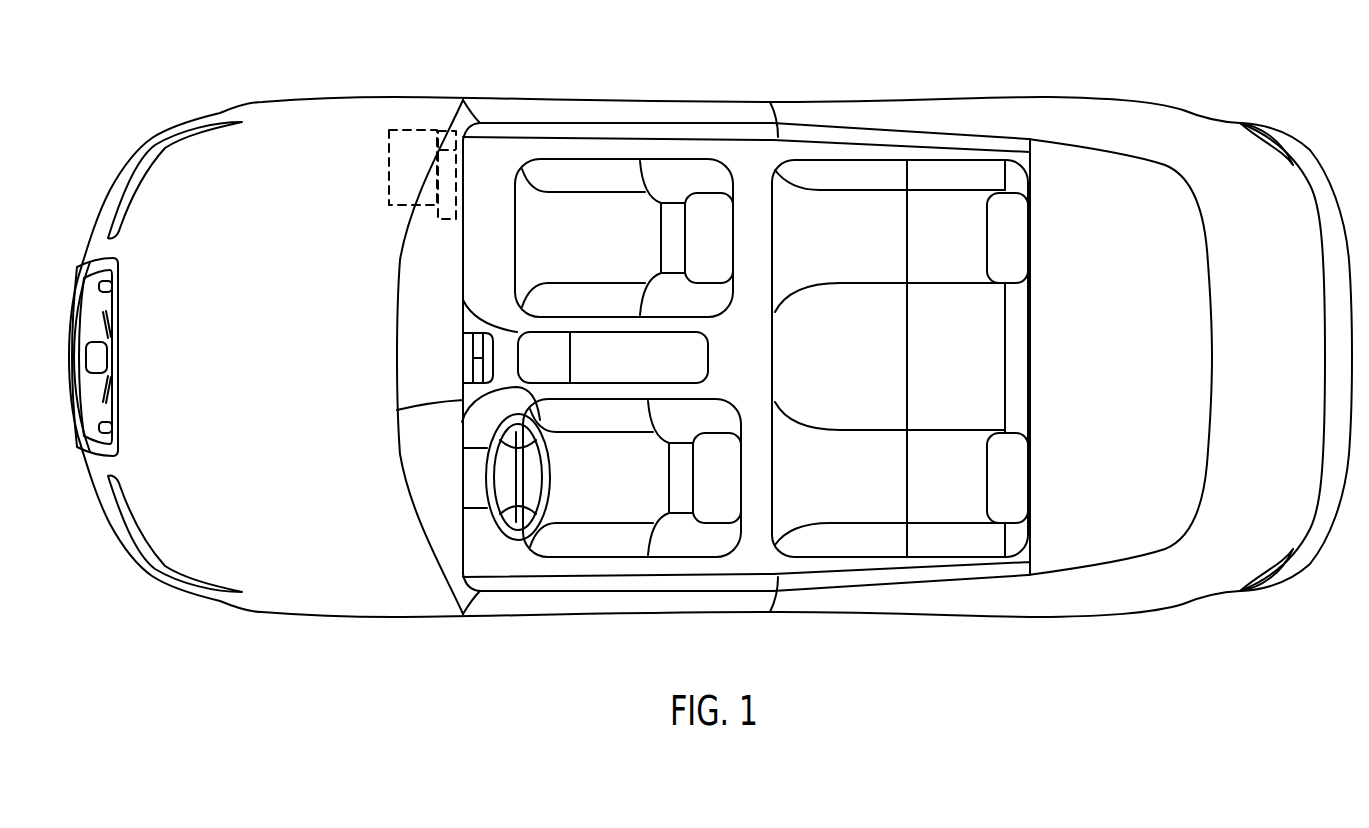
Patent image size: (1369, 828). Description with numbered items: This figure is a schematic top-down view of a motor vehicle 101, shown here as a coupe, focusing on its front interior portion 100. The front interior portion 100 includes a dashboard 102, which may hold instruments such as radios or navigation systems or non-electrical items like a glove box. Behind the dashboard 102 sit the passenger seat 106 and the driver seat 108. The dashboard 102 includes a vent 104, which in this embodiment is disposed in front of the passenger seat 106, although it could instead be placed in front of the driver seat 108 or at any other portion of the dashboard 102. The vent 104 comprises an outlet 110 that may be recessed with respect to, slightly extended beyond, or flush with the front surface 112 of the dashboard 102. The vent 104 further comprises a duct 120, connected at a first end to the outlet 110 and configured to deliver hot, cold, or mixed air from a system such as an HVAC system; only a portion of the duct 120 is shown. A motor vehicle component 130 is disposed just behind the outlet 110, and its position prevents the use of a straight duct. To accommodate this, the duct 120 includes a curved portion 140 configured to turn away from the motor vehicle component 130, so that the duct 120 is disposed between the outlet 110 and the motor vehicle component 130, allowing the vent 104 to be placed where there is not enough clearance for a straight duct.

The front interior portion 100 is at (685, 360).
The motor vehicle 101 is at (898, 615).
The dashboard 102 is at (397, 410).
The vent 104 is at (457, 146).
The passenger seat 106 is at (590, 178).
The driver seat 108 is at (592, 539).
The outlet 110 is at (462, 162).
The front surface 112 is at (465, 241).
The duct 120 is at (437, 217).
The motor vehicle component 130 is at (388, 172).
The curved portion 140 is at (447, 162).